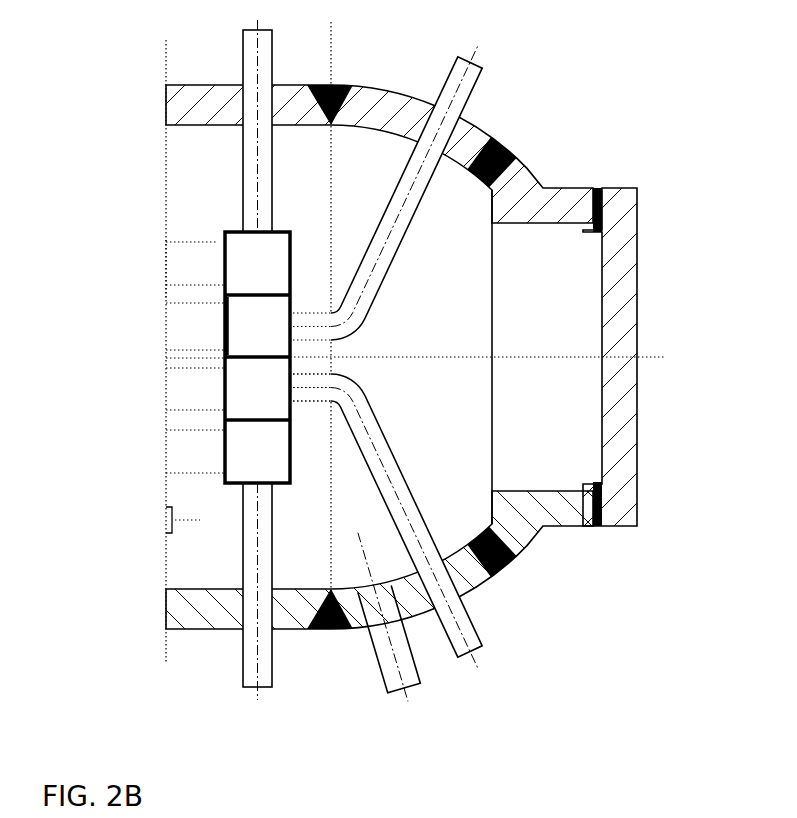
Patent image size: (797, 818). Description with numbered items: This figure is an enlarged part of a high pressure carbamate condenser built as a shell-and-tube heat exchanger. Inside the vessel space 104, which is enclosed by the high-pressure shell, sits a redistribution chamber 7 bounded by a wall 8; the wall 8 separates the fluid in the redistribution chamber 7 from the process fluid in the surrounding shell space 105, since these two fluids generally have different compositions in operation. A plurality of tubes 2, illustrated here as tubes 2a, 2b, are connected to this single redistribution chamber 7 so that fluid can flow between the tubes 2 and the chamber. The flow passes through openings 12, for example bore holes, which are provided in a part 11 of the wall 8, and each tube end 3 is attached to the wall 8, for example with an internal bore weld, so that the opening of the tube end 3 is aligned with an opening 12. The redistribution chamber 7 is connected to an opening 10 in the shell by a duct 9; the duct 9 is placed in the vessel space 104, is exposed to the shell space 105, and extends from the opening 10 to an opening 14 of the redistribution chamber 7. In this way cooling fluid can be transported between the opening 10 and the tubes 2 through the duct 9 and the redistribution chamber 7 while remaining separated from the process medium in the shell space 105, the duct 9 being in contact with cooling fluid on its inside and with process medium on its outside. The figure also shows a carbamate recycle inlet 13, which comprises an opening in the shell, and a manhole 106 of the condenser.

The tubes 2 is at (173, 270).
The tube 2a is at (217, 243).
The tube 2b is at (223, 479).
The tube end 3 is at (206, 318).
The redistribution chamber 7 is at (262, 317).
The wall 8 is at (228, 476).
The duct 9 is at (254, 65).
The opening 10 is at (450, 583).
The part of the wall 11 is at (138, 316).
The openings 12 is at (229, 328).
The carbamate recycle inlet 13 is at (405, 688).
The opening of the redistribution chamber 14 is at (290, 388).
The vessel space 104 is at (477, 357).
The shell space 105 is at (247, 342).
The manhole 106 is at (622, 188).